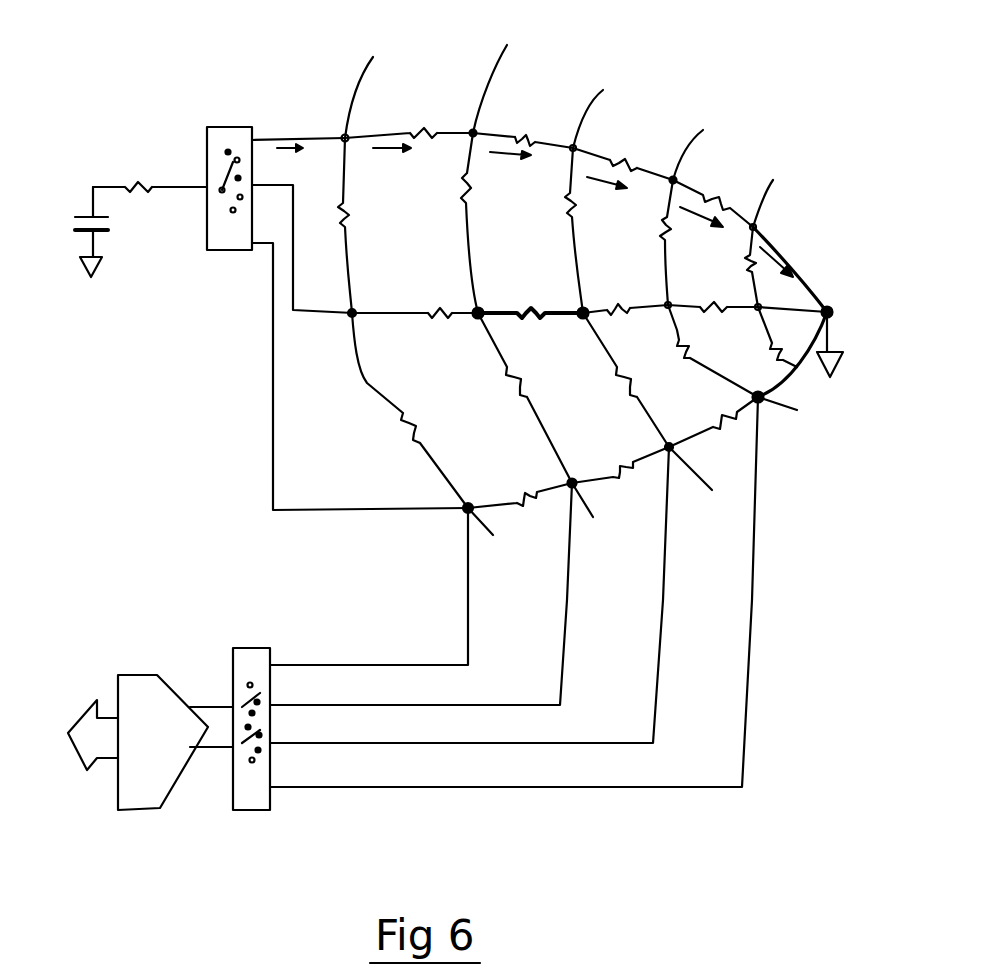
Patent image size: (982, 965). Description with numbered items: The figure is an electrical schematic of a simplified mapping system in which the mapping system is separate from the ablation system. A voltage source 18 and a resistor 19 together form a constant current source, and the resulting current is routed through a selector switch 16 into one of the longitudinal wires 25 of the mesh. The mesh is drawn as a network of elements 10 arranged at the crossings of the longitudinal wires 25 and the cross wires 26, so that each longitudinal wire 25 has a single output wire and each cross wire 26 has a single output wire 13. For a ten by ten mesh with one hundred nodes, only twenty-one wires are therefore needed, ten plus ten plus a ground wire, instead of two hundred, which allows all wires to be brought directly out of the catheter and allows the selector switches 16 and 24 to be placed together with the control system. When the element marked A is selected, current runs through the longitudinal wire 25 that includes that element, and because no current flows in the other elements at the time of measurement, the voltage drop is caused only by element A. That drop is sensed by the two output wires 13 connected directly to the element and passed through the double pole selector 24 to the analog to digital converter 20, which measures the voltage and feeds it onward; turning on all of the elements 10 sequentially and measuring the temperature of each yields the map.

The element 10 is at (410, 125).
The output wire 13 is at (468, 590).
The selector switch 16 is at (227, 262).
The voltage source 18 is at (108, 228).
The resistor 19 is at (142, 170).
The analog to digital converter 20 is at (140, 667).
The double pole selector 24 is at (260, 645).
The longitudinal wire 25 is at (333, 128).
The cross wire 26 is at (497, 80).